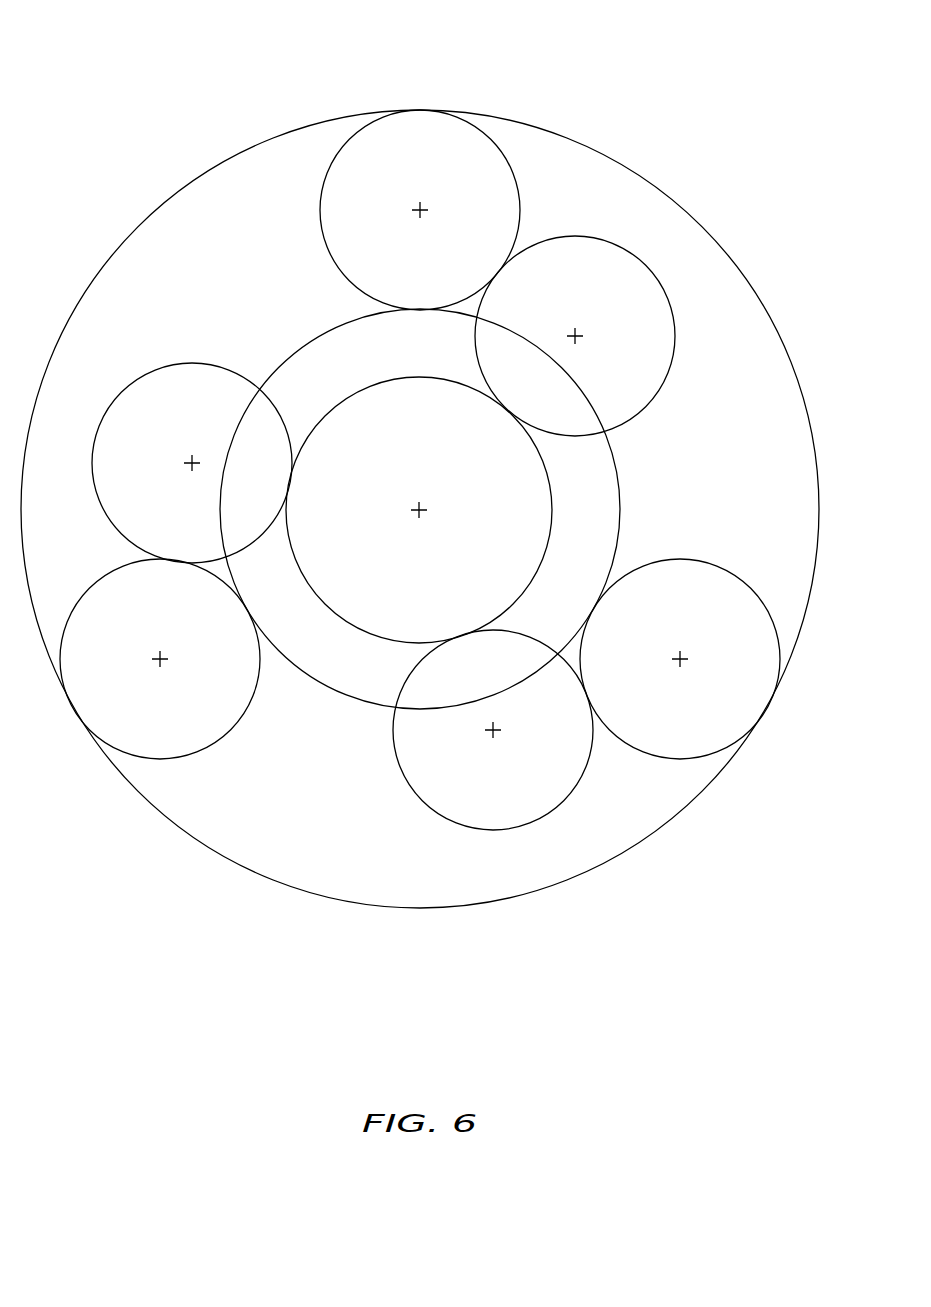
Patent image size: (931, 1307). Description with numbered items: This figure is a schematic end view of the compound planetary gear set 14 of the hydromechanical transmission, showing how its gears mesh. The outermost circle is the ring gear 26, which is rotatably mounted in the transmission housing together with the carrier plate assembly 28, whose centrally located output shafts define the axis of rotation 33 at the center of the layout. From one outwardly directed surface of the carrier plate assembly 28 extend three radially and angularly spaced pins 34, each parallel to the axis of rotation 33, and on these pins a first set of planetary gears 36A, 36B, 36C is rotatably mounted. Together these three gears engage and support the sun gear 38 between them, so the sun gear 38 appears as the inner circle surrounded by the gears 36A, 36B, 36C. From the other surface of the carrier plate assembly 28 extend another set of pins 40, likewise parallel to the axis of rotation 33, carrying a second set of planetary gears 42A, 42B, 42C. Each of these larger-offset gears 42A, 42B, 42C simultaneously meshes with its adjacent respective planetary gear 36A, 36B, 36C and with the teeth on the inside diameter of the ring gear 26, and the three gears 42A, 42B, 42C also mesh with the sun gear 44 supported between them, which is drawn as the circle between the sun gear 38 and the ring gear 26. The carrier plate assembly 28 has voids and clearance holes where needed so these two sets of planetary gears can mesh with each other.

The compound planetary gear set 14 is at (135, 157).
The ring gear 26 is at (262, 143).
The carrier plate assembly 28 is at (727, 321).
The axis of rotation 33 is at (419, 509).
The pins 34 is at (575, 335).
The planetary gear 36A is at (648, 265).
The planetary gear 36B is at (568, 797).
The planetary gear 36C is at (118, 393).
The sun gear 38 is at (350, 395).
The pins 40 is at (420, 209).
The planetary gear 42A is at (493, 145).
The planetary gear 42B is at (713, 752).
The planetary gear 42C is at (160, 758).
The sun gear 44 is at (620, 488).